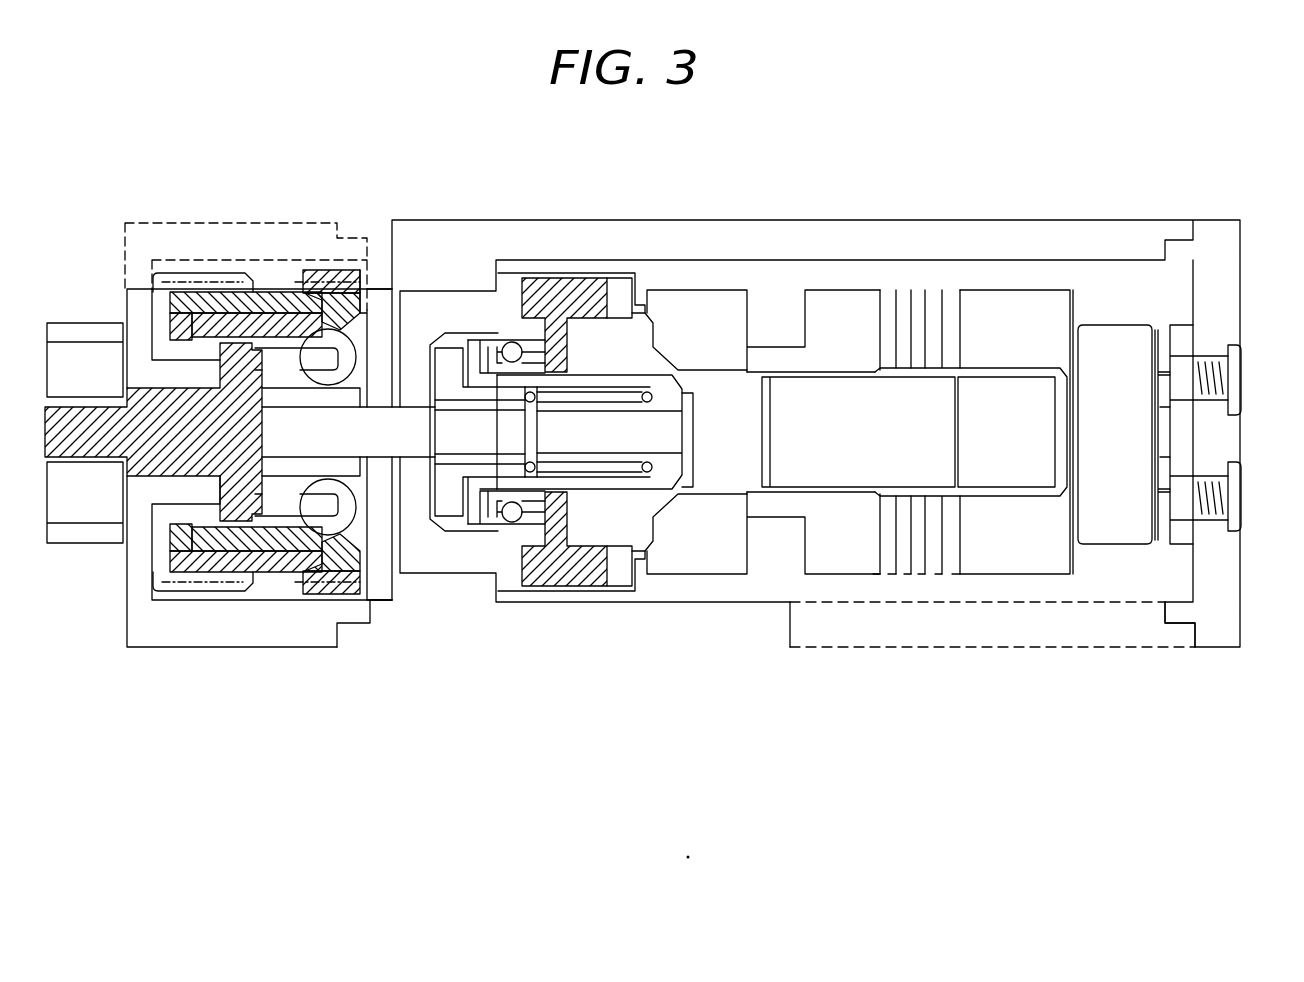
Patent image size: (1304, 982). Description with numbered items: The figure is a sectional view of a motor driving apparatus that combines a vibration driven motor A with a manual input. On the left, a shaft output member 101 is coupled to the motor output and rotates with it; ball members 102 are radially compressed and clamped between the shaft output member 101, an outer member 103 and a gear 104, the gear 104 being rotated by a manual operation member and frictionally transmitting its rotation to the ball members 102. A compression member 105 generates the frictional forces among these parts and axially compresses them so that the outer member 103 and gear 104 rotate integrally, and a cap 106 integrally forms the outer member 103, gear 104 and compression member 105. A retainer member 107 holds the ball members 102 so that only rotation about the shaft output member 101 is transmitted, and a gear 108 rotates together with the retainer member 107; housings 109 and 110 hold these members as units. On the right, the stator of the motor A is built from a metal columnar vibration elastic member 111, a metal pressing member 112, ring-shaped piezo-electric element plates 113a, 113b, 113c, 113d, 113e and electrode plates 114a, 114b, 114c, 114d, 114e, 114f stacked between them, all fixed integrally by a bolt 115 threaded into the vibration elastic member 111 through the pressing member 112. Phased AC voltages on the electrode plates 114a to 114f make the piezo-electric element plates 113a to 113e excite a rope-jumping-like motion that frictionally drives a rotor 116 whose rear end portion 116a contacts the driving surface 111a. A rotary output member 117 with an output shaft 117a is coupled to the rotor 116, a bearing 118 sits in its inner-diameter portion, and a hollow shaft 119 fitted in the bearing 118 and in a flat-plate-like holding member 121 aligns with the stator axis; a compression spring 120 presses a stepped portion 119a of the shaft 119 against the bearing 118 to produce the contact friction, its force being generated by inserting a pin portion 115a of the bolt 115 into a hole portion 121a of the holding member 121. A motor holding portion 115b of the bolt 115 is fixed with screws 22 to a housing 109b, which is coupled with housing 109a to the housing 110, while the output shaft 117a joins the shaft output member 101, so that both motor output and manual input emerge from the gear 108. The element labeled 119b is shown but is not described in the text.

The shaft output member 101 is at (376, 400).
The ball members 102 is at (322, 305).
The outer member 103 is at (244, 315).
The gear 104 is at (338, 340).
The compression member 105 is at (180, 298).
The cap 106 is at (158, 290).
The retainer member 107 is at (152, 410).
The gear 108 is at (67, 355).
The housing 109 is at (707, 647).
The housing 109a is at (375, 625).
The housing 109b is at (1222, 625).
The housing 110 is at (230, 640).
The vibration elastic member 111 is at (738, 298).
The driving surface 111a is at (657, 345).
The pressing member 112 is at (1018, 309).
The piezo-electric element plate 113a is at (881, 300).
The piezo-electric element plate 113b is at (897, 300).
The piezo-electric element plate 113c is at (912, 300).
The piezo-electric element plate 113d is at (926, 300).
The piezo-electric element plate 113e is at (943, 300).
The electrode plate 114a is at (873, 578).
The electrode plate 114b is at (893, 578).
The electrode plate 114c is at (905, 578).
The electrode plate 114d is at (922, 578).
The electrode plate 114e is at (940, 578).
The electrode plate 114f is at (958, 578).
The bolt 115 is at (1111, 342).
The pin portion 115a is at (497, 425).
The motor holding portion 115b is at (1177, 338).
The rotor 116 is at (598, 290).
The rear end portion 116a is at (656, 313).
The rotary output member 117 is at (456, 296).
The output shaft 117a is at (292, 450).
The bearing 118 is at (512, 522).
The hollow shaft 119 is at (576, 486).
The stepped portion 119a is at (672, 462).
The spool flange 119b is at (478, 530).
The compression spring 120 is at (618, 465).
The holding member 121 is at (460, 478).
The hole portion 121a is at (450, 450).
The screws 22 is at (1237, 482).
The vibration driven motor A is at (815, 275).